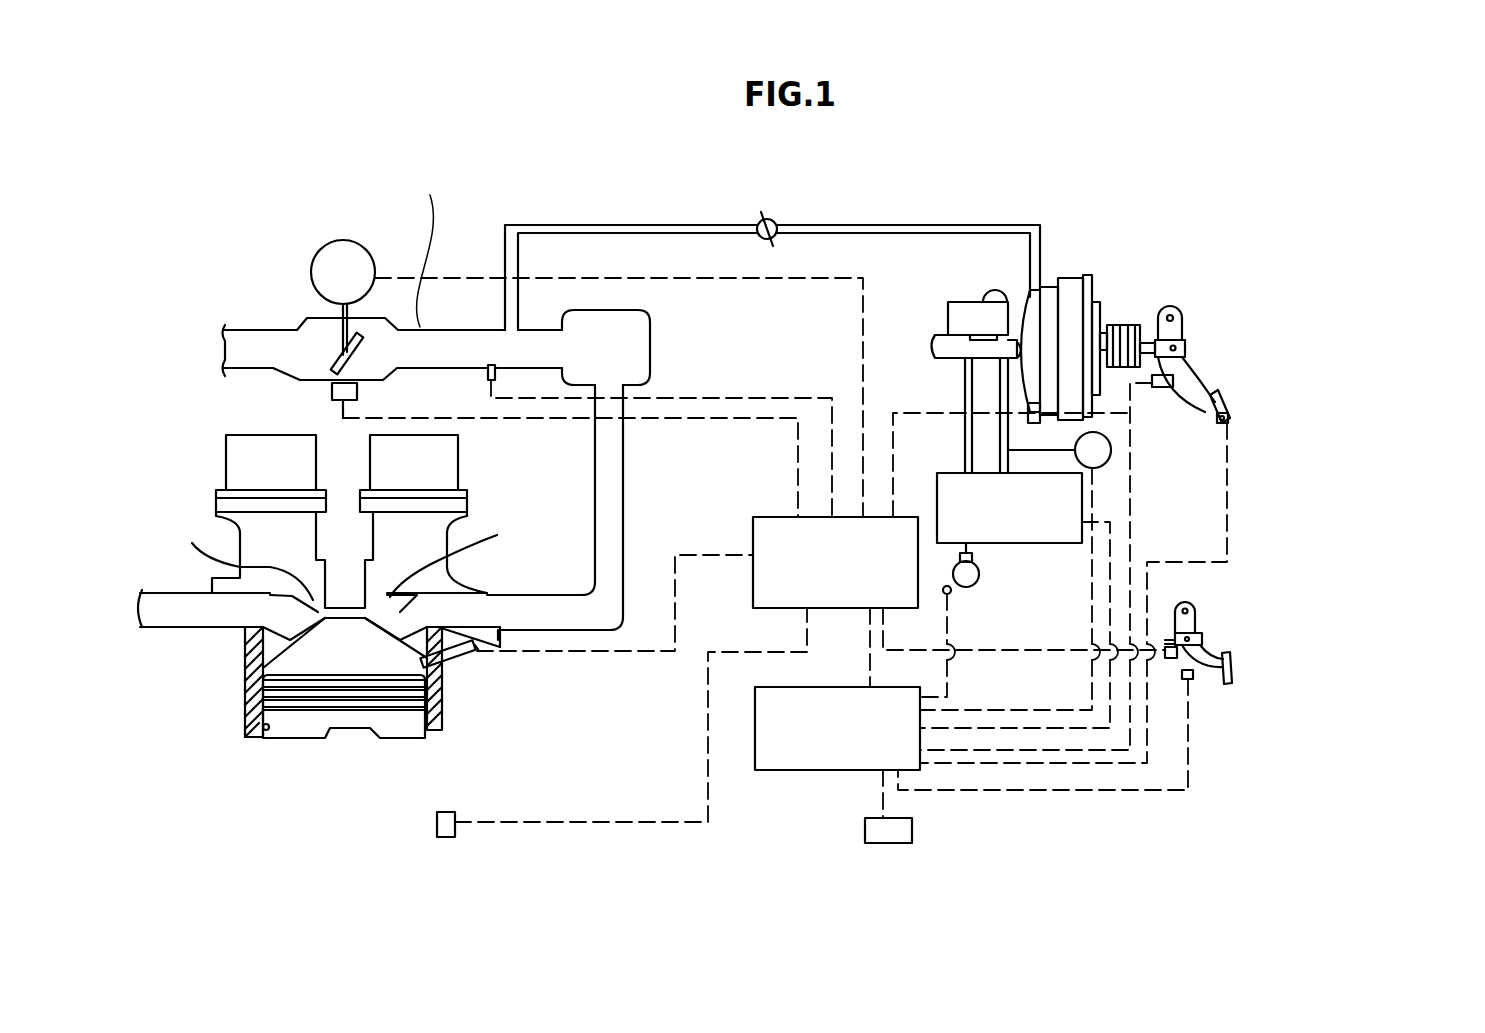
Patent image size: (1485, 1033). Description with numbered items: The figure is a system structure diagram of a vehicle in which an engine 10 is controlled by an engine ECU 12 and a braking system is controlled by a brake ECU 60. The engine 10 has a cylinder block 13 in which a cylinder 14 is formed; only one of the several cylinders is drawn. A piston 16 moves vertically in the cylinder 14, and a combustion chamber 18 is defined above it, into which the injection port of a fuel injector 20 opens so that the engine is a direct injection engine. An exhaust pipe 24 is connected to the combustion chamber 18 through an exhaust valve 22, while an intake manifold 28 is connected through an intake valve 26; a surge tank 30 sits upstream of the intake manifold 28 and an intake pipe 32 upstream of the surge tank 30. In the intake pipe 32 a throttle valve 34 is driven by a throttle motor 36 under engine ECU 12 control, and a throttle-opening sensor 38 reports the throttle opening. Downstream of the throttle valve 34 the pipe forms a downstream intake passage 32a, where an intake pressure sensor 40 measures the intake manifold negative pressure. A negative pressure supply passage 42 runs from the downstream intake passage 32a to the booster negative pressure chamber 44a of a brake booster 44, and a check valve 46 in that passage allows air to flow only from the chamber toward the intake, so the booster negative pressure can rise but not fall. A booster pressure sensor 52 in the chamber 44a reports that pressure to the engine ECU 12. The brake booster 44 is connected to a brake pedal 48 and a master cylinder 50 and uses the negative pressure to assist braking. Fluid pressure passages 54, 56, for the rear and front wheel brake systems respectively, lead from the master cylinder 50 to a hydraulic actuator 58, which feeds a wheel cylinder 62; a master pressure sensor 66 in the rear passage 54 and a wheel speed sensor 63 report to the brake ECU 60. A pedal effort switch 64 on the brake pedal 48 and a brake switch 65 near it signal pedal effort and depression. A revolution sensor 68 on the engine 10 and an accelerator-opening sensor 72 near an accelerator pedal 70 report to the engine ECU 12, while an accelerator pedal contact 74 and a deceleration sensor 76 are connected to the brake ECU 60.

The engine 10 is at (464, 718).
The engine ECU 12 is at (753, 590).
The cylinder block 13 is at (247, 652).
The cylinder 14 is at (263, 727).
The piston 16 is at (300, 730).
The combustion chamber 18 is at (400, 668).
The fuel injector 20 is at (470, 657).
The exhaust valve 22 is at (265, 537).
The exhaust pipe 24 is at (170, 630).
The intake valve 26 is at (440, 537).
The intake manifold 28 is at (615, 548).
The surge tank 30 is at (650, 367).
The intake pipe 32 is at (273, 373).
The downstream intake passage 32a is at (539, 237).
The throttle valve 34 is at (343, 353).
The throttle motor 36 is at (352, 252).
The throttle-opening sensor 38 is at (332, 398).
The intake pressure sensor 40 is at (485, 390).
The negative pressure supply passage 42 is at (662, 224).
The brake booster 44 is at (1249, 298).
The booster negative pressure chamber 44a is at (1055, 277).
The check valve 46 is at (777, 212).
The brake pedal 48 is at (1217, 393).
The master cylinder 50 is at (938, 353).
The booster pressure sensor 52 is at (1067, 422).
The fluid pressure passage 54 is at (998, 393).
The fluid pressure passage 56 is at (965, 435).
The hydraulic actuator 58 is at (937, 487).
The brake ECU 60 is at (832, 772).
The wheel cylinder 62 is at (979, 568).
The wheel speed sensor 63 is at (951, 594).
The pedal effort switch 64 is at (1227, 427).
The brake switch 65 is at (1170, 388).
The master pressure sensor 66 is at (1111, 455).
The revolution sensor 68 is at (437, 820).
The accelerator pedal 70 is at (1232, 662).
The accelerator-opening sensor 72 is at (1163, 643).
The accelerator pedal contact 74 is at (1193, 680).
The deceleration sensor 76 is at (913, 830).